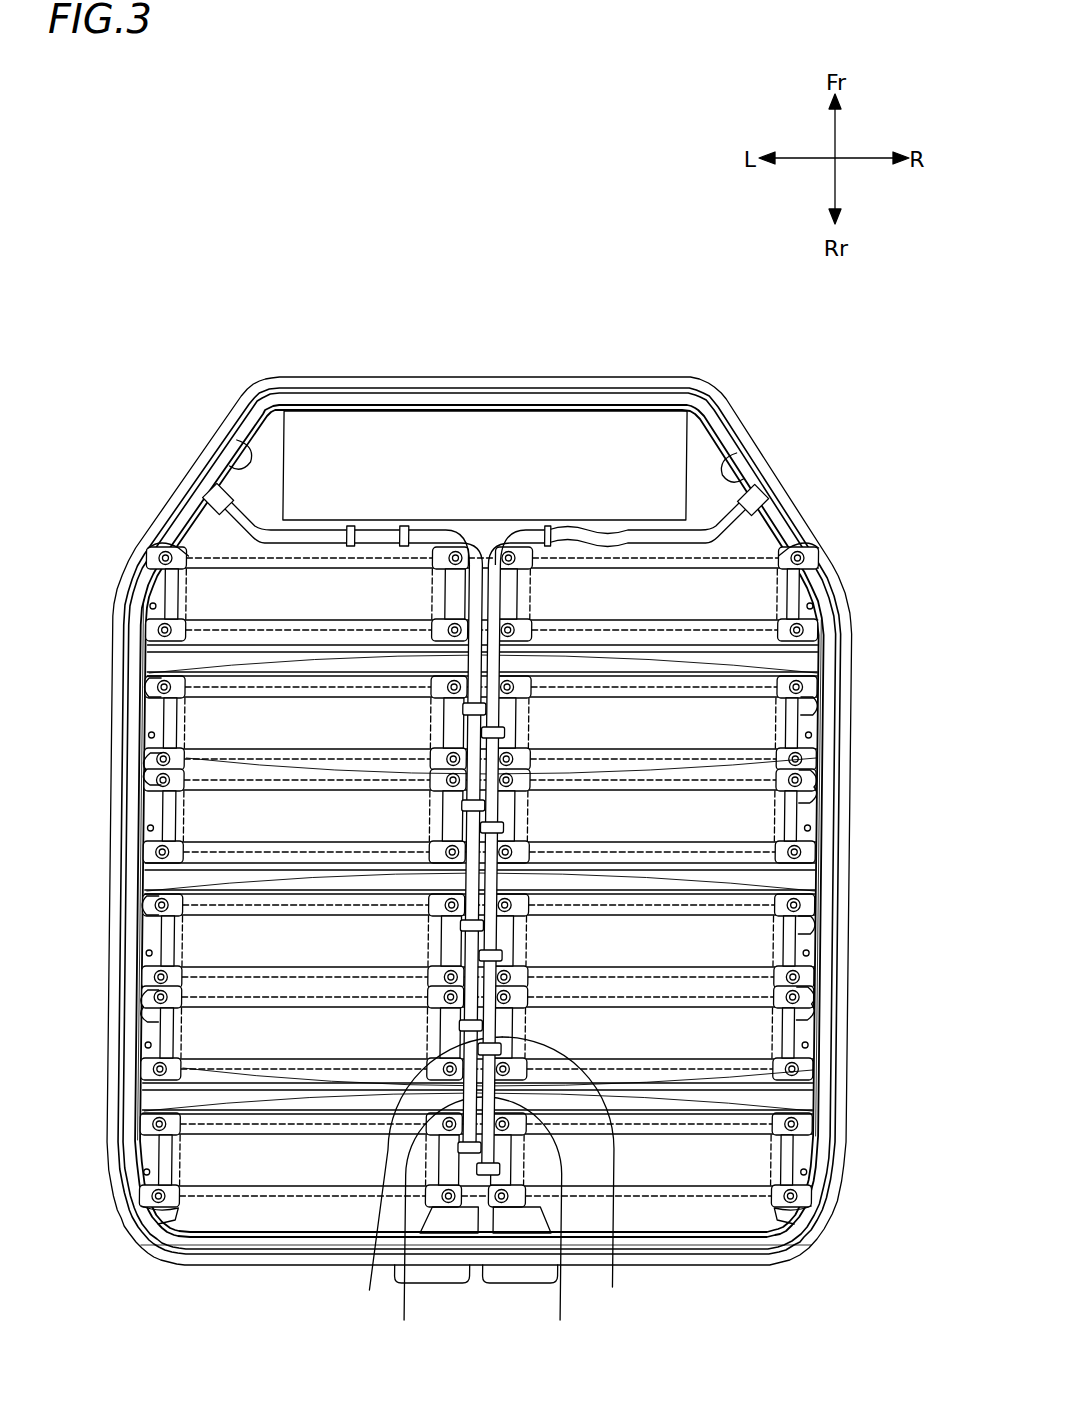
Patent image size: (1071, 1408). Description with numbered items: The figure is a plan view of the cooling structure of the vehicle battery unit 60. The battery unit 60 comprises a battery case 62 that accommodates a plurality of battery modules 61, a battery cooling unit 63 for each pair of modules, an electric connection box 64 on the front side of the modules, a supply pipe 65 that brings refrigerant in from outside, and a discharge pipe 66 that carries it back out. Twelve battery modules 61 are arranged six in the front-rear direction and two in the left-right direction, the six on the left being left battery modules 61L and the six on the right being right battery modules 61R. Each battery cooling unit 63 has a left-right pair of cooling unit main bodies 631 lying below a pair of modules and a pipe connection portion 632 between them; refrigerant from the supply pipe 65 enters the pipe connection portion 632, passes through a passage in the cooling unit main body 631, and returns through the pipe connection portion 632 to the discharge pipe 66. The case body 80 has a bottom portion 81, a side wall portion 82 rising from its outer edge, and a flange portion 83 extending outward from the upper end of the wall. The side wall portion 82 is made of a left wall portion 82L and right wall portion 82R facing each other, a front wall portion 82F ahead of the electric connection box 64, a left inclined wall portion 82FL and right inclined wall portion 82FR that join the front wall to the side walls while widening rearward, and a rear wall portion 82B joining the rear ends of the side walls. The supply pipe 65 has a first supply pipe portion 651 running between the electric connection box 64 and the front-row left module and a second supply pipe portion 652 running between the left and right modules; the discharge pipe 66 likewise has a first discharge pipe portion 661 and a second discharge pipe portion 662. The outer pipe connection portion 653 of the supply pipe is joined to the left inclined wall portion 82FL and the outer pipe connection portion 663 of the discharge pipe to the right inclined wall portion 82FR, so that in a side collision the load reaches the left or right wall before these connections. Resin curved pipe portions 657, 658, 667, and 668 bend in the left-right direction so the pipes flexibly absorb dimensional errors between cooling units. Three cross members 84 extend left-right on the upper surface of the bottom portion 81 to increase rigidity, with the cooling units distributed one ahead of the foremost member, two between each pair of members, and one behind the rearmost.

The battery unit 60 is at (880, 578).
The battery module 61 is at (487, 821).
The left battery module 61L is at (217, 558).
The right battery module 61R is at (808, 596).
The battery case 62 is at (858, 742).
The case body 80 is at (541, 1008).
The battery cooling unit 63 is at (205, 598).
The electric connection box 64 is at (510, 452).
The supply pipe 65 is at (304, 818).
The discharge pipe 66 is at (666, 817).
The first supply pipe portion 651 is at (330, 525).
The second supply pipe portion 652 is at (420, 1177).
The outer pipe connection portion 653 is at (212, 492).
The first discharge pipe portion 661 is at (660, 527).
The second discharge pipe portion 662 is at (570, 1177).
The outer pipe connection portion 663 is at (768, 515).
The curved pipe portion 657 is at (158, 762).
The curved pipe portion 658 is at (160, 687).
The curved pipe portion 667 is at (805, 805).
The curved pipe portion 668 is at (806, 690).
The cooling unit main body 631 is at (246, 1160).
The pipe connection portion 632 is at (472, 1170).
The bottom portion 81 is at (487, 821).
The side wall portion 82 is at (476, 817).
The front wall portion 82F is at (603, 420).
The left inclined wall portion 82FL is at (238, 445).
The right inclined wall portion 82FR is at (740, 462).
The left wall portion 82L is at (150, 838).
The right wall portion 82R is at (810, 837).
The rear wall portion 82B is at (667, 1224).
The flange portion 83 is at (168, 540).
The cross member 84 is at (175, 650).